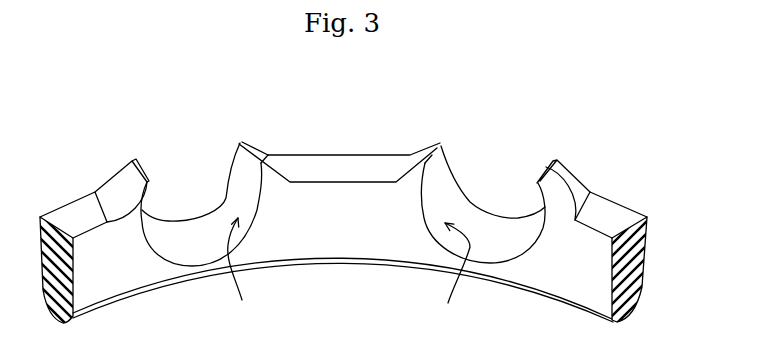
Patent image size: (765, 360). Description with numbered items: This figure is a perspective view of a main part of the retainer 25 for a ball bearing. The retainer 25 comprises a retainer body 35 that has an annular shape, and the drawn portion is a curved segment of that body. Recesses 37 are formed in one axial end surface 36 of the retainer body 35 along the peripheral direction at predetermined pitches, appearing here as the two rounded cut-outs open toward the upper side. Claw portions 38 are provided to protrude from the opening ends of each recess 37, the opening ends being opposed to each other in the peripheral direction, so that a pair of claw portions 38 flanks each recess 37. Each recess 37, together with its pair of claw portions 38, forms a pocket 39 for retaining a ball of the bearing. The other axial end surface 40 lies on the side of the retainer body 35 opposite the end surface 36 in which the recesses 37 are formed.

The retainer 25 is at (632, 173).
The retainer body 35 is at (315, 152).
The one axial end surface 36 is at (360, 167).
The recess 37 is at (170, 243).
The claw portion 38 is at (113, 182).
The pocket 39 is at (349, 274).
The other axial end surface 40 is at (343, 266).